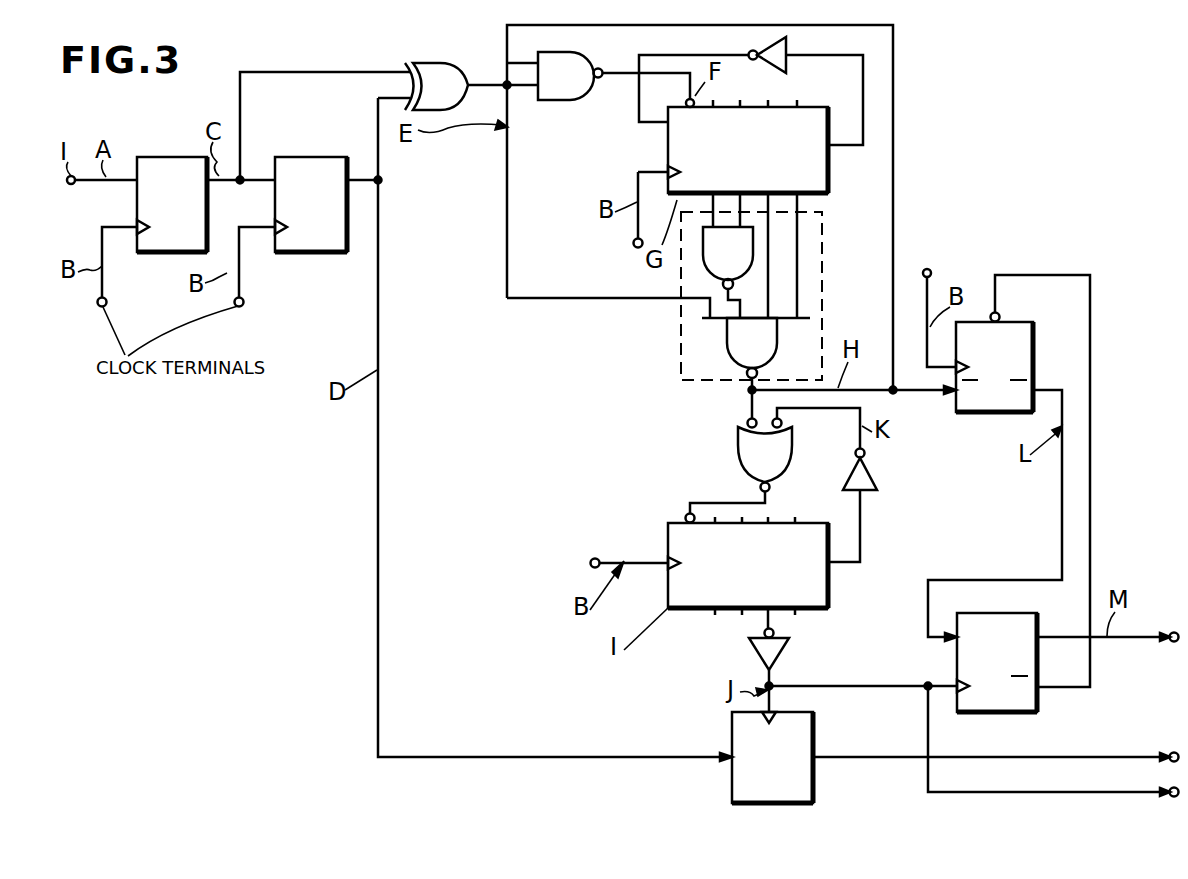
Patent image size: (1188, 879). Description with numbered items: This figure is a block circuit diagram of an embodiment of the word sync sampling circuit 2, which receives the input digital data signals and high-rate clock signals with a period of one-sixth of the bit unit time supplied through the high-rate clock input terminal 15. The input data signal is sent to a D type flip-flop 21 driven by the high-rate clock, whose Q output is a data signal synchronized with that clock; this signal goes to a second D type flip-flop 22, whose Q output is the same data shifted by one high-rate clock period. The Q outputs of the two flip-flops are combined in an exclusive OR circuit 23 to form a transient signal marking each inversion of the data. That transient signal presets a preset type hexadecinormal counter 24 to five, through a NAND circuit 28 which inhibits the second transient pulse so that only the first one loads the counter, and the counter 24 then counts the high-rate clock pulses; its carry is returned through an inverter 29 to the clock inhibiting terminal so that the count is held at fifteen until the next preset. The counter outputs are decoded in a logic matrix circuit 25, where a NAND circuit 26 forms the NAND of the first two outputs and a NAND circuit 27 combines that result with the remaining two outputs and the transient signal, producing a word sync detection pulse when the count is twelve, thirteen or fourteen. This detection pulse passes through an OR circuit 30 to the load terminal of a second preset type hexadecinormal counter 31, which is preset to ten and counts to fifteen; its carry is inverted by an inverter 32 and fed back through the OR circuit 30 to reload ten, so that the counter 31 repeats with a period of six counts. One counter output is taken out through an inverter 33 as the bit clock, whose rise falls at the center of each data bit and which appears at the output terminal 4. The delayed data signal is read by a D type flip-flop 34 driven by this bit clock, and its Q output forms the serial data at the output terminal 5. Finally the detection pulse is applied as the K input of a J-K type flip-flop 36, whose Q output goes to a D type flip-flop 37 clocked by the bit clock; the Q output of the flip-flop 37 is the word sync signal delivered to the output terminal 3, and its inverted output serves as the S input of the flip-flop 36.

The word sync sampling circuit 2 is at (925, 150).
The output terminal 3 is at (1172, 632).
The output terminal 4 is at (1170, 790).
The output terminal 5 is at (1170, 754).
The high-rate clock input terminal 15 is at (98, 306).
The D type flip-flop 21 is at (162, 155).
The D type flip-flop 22 is at (304, 155).
The exclusive OR circuit 23 is at (430, 48).
The counter 24 is at (828, 176).
The logic matrix circuit 25 is at (822, 312).
The NAND circuit 26 is at (703, 255).
The NAND circuit 27 is at (727, 345).
The NAND circuit 28 is at (536, 55).
The inverter 29 is at (788, 60).
The OR circuit 30 is at (738, 446).
The counter 31 is at (692, 611).
The inverter 32 is at (878, 476).
The inverter 33 is at (788, 652).
The D type flip-flop 34 is at (814, 780).
The J-K type flip-flop 36 is at (1034, 346).
The D type flip-flop 37 is at (1023, 712).